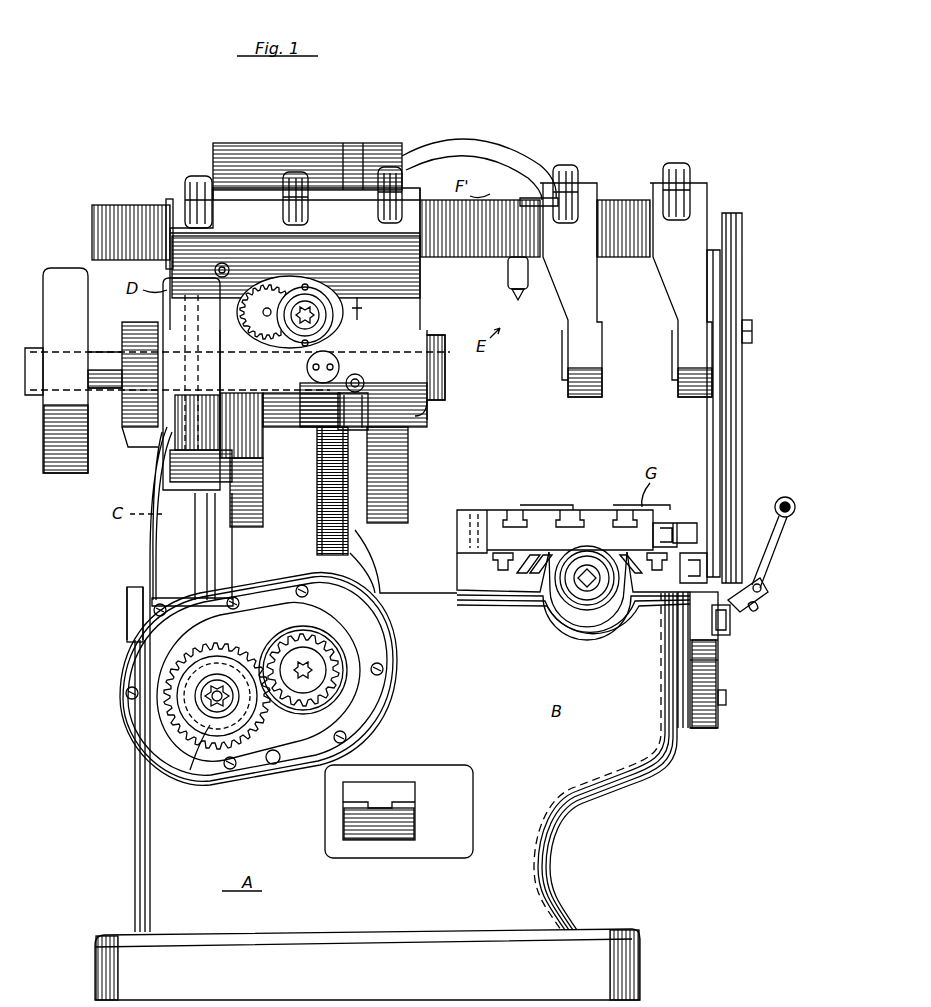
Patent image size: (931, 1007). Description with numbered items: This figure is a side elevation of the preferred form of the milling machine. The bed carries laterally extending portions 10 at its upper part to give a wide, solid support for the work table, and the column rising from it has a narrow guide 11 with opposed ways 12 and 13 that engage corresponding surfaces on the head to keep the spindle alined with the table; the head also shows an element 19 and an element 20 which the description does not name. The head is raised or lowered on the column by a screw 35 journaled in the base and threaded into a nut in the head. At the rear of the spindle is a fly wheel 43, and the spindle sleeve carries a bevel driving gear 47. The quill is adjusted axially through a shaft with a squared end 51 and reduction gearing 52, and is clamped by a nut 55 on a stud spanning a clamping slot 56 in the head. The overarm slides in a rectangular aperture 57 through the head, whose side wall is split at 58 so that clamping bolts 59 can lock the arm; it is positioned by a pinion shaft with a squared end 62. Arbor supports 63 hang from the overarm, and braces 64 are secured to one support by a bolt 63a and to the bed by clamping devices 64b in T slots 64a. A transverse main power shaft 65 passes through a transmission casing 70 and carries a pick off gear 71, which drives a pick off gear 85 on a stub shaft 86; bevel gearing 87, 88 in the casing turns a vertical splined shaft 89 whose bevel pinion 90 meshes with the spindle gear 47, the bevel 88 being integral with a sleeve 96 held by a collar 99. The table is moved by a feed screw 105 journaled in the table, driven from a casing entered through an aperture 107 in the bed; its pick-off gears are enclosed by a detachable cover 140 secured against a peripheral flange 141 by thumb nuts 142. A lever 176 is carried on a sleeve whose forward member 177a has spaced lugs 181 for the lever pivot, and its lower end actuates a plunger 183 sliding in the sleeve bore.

The laterally extending portions 10 is at (523, 598).
The narrow guide 11 is at (396, 142).
The way 12 is at (413, 150).
The way 13 is at (360, 150).
The block 19 is at (396, 478).
The bracket 20 is at (252, 503).
The screw 35 is at (314, 452).
The fly wheel 43 is at (80, 446).
The bevel driving gear 47 is at (248, 347).
The squared end 51 is at (325, 340).
The reduction gearing 52 is at (292, 290).
The nut 55 is at (338, 363).
The clamping slot 56 is at (291, 405).
The aperture 57 is at (432, 408).
The split 58 is at (262, 203).
The clamping bolts 59 is at (201, 176).
The squared end 62 is at (214, 272).
The supports 63 is at (680, 288).
The bolt 63a is at (752, 337).
The braces 64 is at (718, 498).
The T slots 64a is at (665, 608).
The clamping devices 64b is at (744, 560).
The main power shaft 65 is at (318, 679).
The transmission casing 70 is at (258, 630).
The pick off gear 71 is at (293, 703).
The pick off gear 85 is at (210, 703).
The stub shaft 86 is at (200, 710).
The bevel gear 87 is at (200, 700).
The bevel gear 88 is at (188, 672).
The vertical splined shaft 89 is at (212, 547).
The bevel pinion 90 is at (228, 450).
The sleeve 96 is at (200, 627).
The collar 99 is at (200, 583).
The feed screw 105 is at (586, 592).
The aperture 107 is at (692, 726).
The detachable cover 140 is at (716, 680).
The peripheral flange 141 is at (712, 712).
The thumb nuts 142 is at (727, 698).
The lever 176 is at (781, 536).
The member 177a is at (712, 668).
The lugs 181 is at (757, 612).
The plunger 183 is at (732, 630).